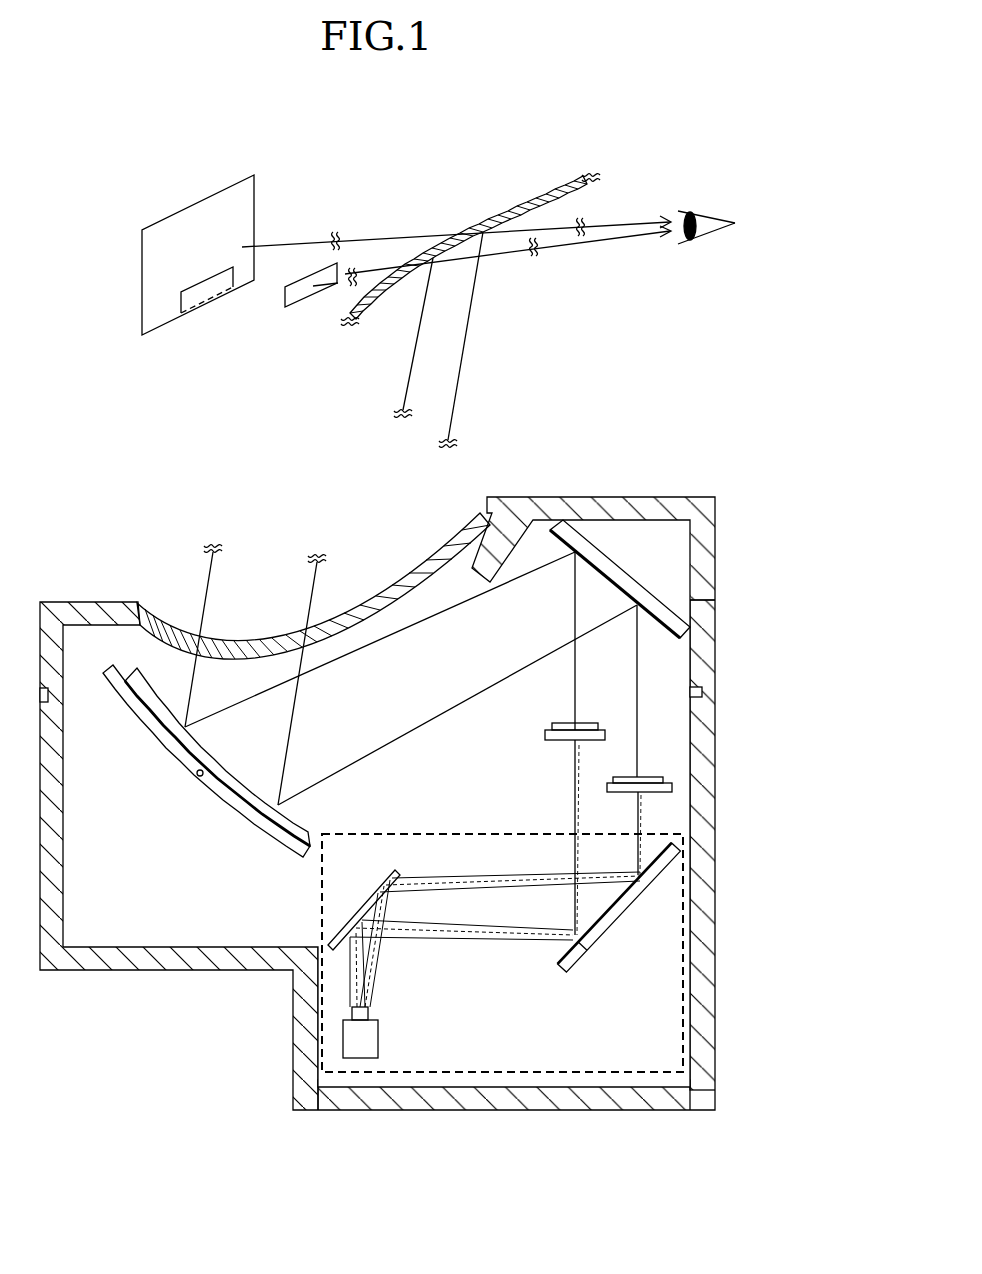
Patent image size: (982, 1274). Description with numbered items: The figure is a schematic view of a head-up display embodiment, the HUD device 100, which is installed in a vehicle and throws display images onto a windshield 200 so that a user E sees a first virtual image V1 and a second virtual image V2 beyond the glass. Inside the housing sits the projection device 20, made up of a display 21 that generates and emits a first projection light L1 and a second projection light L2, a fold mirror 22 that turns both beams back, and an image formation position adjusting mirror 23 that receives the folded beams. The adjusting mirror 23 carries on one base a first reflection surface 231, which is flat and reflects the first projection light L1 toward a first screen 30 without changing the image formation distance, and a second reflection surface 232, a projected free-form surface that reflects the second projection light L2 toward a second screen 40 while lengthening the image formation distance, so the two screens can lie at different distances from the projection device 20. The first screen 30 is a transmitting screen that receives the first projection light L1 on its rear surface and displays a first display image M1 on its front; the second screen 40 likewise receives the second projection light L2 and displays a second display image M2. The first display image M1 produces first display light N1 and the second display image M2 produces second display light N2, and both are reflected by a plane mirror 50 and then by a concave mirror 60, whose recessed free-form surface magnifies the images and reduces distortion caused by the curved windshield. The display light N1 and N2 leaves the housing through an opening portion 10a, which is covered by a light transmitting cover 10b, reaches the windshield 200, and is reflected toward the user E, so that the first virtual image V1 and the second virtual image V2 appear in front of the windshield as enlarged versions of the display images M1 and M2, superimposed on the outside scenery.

The HUD device 100 is at (633, 496).
The windshield 200 is at (548, 192).
The user E is at (693, 212).
The first virtual image V1 is at (254, 195).
The second virtual image V2 is at (285, 308).
The first display light N1 is at (463, 375).
The second display light N2 is at (424, 329).
The opening portion 10a is at (142, 607).
The light transmitting cover 10b is at (417, 583).
The projection device 20 is at (466, 831).
The display 21 is at (378, 1037).
The fold mirror 22 is at (383, 884).
The image formation position adjusting mirror 23 is at (557, 974).
The first reflection surface 231 is at (633, 897).
The second reflection surface 232 is at (582, 960).
The first screen 30 is at (607, 787).
The second screen 40 is at (545, 736).
The first display image M1 is at (662, 765).
The second display image M2 is at (590, 724).
The first projection light L1 is at (641, 803).
The second projection light L2 is at (576, 750).
The plane mirror 50 is at (618, 575).
The concave mirror 60 is at (132, 700).